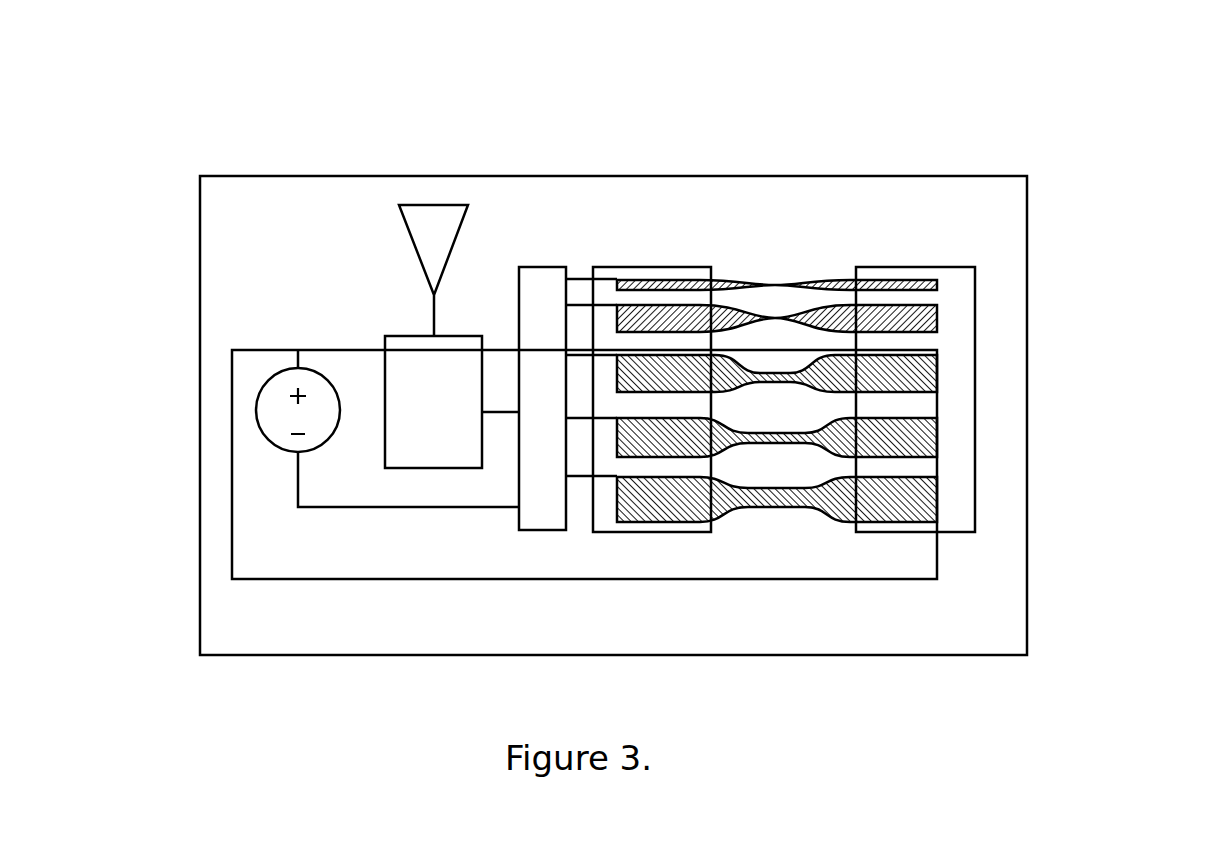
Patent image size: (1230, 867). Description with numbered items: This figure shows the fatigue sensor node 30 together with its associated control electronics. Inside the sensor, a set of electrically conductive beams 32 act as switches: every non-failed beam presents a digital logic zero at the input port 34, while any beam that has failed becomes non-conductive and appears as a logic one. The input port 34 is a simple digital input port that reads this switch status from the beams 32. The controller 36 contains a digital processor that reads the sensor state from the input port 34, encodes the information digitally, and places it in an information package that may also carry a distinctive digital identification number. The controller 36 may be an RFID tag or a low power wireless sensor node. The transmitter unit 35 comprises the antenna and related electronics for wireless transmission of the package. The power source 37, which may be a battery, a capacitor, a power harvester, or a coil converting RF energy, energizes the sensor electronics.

The sensor node 30 is at (1024, 334).
The beams 32 is at (903, 267).
The input port 34 is at (546, 254).
The transmitter unit 35 is at (393, 243).
The controller 36 is at (364, 332).
The power source 37 is at (255, 377).